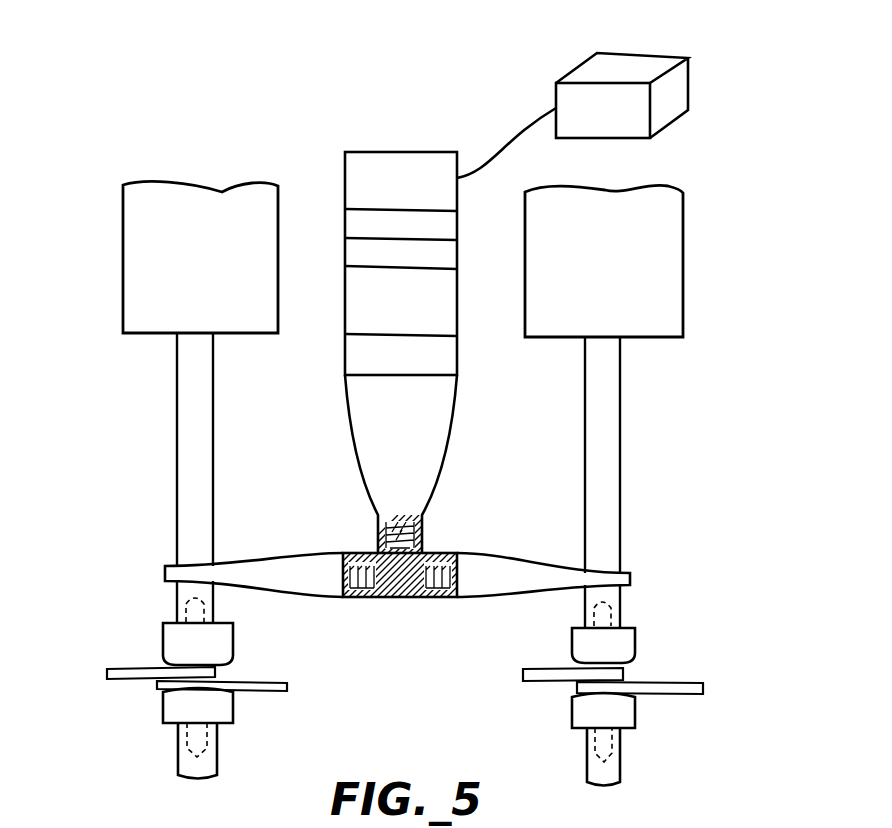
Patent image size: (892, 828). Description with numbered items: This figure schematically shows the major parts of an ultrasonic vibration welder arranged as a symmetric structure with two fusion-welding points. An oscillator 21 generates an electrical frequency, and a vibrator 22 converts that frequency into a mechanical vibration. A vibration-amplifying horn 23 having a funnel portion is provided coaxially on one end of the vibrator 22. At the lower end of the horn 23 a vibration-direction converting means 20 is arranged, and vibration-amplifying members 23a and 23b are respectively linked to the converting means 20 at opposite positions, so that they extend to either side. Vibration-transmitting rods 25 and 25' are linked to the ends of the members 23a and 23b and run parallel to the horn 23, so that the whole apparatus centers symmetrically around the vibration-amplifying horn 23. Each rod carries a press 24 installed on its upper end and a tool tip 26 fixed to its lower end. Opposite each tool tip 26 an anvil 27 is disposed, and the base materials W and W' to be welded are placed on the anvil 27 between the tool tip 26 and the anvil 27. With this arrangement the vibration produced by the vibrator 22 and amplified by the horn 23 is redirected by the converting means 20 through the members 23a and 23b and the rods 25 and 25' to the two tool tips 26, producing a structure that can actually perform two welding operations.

The vibration-direction converting means 20 is at (400, 598).
The oscillator 21 is at (643, 65).
The vibrator 22 is at (390, 170).
The vibration-amplifying horn 23 is at (426, 452).
The vibration-amplifying member 23a is at (300, 590).
The vibration-amplifying member 23b is at (512, 590).
The press 24 is at (222, 196).
The vibration-transmitting rod 25 is at (163, 478).
The vibration-transmitting rod 25' is at (634, 482).
The tool tip 26 is at (168, 646).
The anvil 27 is at (170, 706).
The base material W is at (334, 687).
The base material W' is at (453, 681).